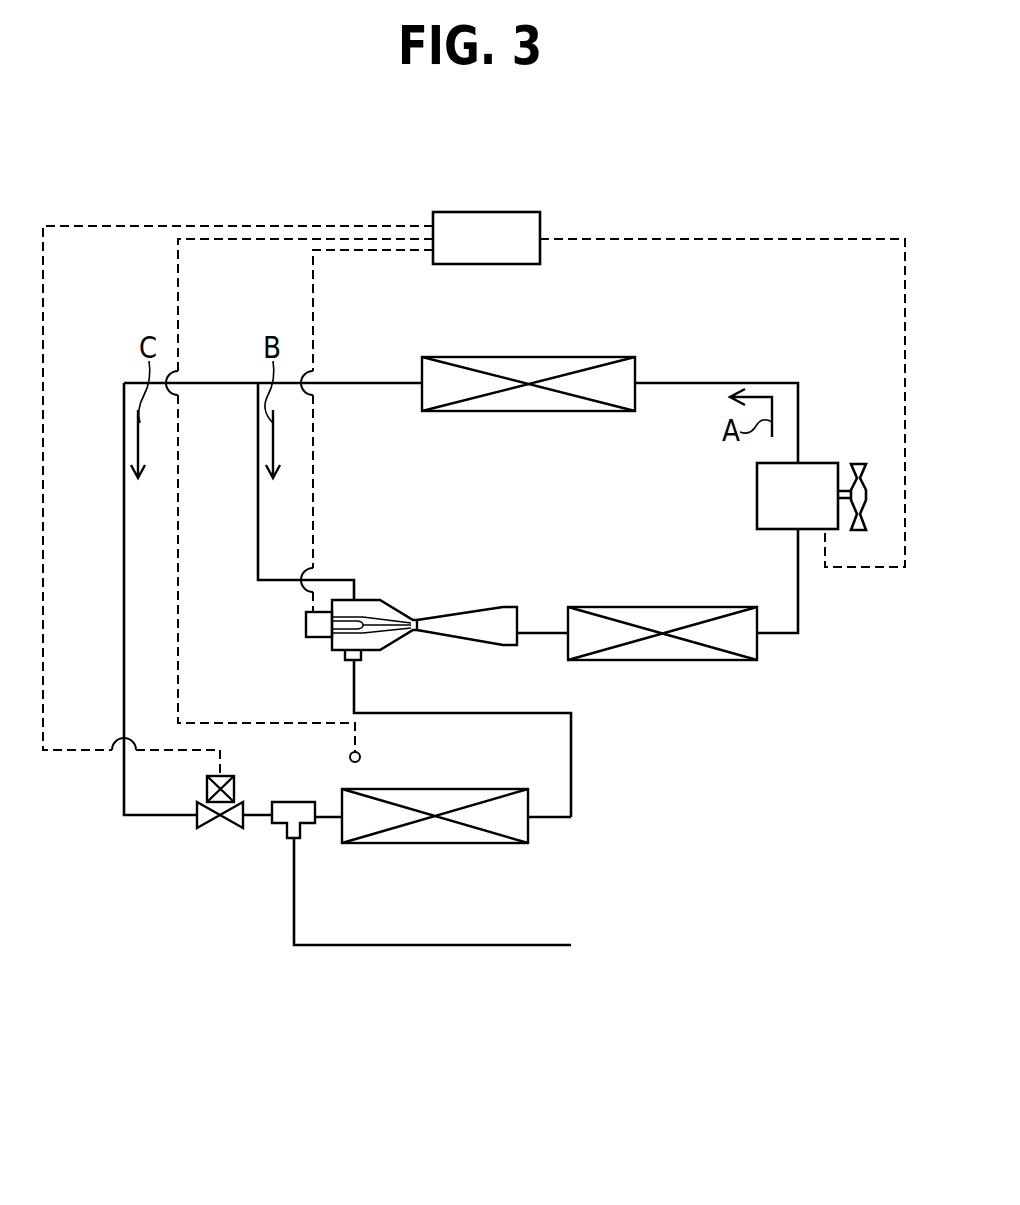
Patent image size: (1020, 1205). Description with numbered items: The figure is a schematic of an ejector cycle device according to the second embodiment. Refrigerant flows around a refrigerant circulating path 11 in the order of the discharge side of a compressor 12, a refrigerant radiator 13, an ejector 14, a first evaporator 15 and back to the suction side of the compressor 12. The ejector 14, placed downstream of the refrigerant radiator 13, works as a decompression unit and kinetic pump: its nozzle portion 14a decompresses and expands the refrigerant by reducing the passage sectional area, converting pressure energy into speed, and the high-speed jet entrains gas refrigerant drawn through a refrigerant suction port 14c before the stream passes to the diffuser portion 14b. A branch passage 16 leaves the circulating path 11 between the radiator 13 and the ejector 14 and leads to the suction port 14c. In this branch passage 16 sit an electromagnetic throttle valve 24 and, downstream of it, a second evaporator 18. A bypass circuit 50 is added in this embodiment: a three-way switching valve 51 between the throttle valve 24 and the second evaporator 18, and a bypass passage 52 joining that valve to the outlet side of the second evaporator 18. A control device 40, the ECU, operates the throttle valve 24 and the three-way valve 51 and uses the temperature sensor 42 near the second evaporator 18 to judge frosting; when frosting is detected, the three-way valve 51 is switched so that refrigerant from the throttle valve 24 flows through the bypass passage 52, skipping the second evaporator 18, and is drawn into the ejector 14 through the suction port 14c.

The control device 40 is at (516, 212).
The refrigerant radiator 13 is at (512, 357).
The compressor 12 is at (813, 463).
The first evaporator 15 is at (630, 607).
The refrigerant circulating path 11 is at (258, 512).
The branch passage 16 is at (124, 590).
The ejector 14 is at (419, 621).
The nozzle portion 14a is at (380, 617).
The diffuser portion 14b is at (482, 646).
The refrigerant suction port 14c is at (362, 655).
The temperature sensor 42 is at (361, 756).
The electromagnetic throttle valve 24 is at (217, 829).
The second evaporator 18 is at (440, 844).
The three-way switching valve 51 is at (278, 825).
The bypass passage 52 is at (432, 925).
The bypass circuit 50 is at (410, 935).